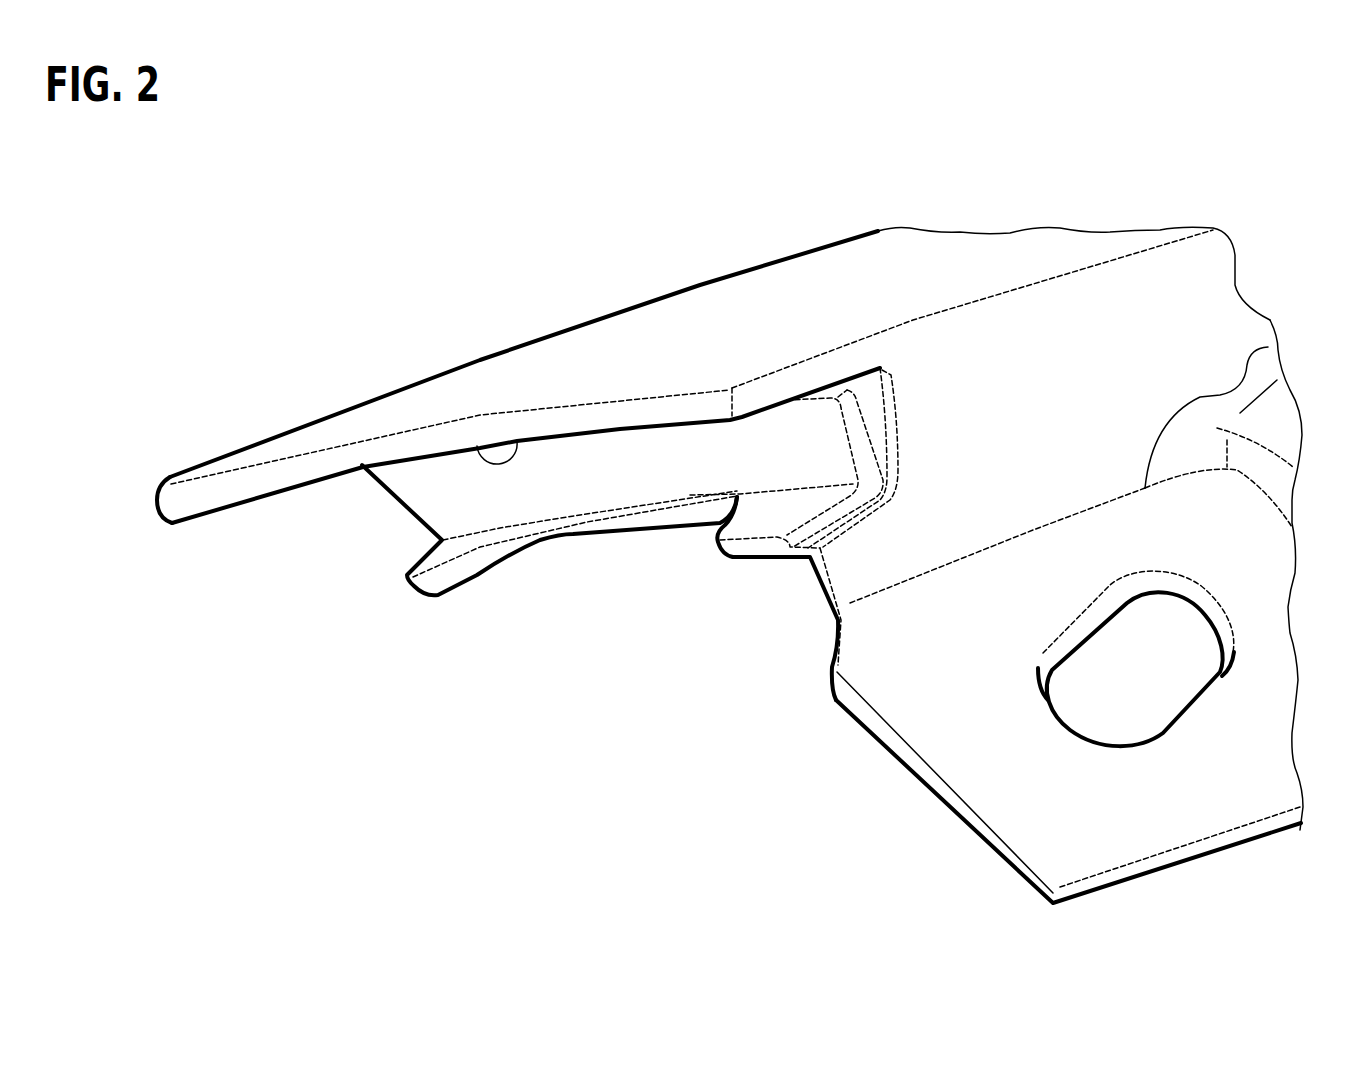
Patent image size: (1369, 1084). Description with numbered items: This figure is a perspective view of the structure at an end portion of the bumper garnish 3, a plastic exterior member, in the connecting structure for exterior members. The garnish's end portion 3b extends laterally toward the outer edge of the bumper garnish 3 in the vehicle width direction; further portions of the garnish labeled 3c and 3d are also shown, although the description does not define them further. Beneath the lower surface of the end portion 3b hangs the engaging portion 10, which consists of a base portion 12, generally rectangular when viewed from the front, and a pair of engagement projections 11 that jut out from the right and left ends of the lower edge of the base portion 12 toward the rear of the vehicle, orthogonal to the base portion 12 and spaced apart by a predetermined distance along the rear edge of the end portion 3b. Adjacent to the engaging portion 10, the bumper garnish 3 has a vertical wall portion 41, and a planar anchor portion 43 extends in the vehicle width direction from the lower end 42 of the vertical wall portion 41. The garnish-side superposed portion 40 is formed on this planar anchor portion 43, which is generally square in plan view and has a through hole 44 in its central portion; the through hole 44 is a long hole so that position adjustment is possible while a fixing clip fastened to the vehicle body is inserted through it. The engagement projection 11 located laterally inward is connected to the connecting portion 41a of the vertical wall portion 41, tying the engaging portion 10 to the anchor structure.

The bumper garnish 3 is at (584, 296).
The end portion 3b is at (222, 450).
The upper surface of panel 3c is at (700, 318).
The notch of panel 3d is at (478, 446).
The engaging portion 10 is at (549, 600).
The engagement projection 11 is at (438, 585).
The base portion 12 is at (627, 463).
The garnish-side superposed portion 40 is at (1025, 583).
The vertical wall portion 41 is at (1193, 302).
The connecting portion 41a is at (875, 553).
The lower end 42 is at (1268, 347).
The planar anchor portion 43 is at (1257, 610).
The through hole 44 is at (1200, 681).